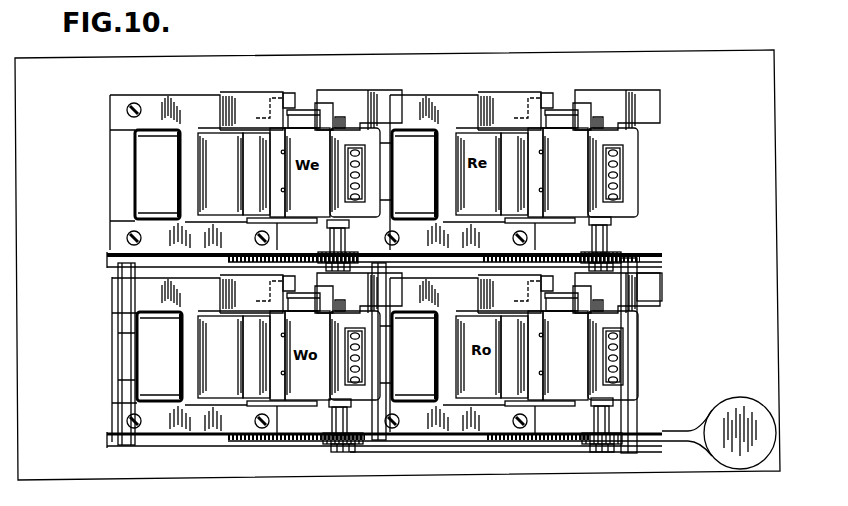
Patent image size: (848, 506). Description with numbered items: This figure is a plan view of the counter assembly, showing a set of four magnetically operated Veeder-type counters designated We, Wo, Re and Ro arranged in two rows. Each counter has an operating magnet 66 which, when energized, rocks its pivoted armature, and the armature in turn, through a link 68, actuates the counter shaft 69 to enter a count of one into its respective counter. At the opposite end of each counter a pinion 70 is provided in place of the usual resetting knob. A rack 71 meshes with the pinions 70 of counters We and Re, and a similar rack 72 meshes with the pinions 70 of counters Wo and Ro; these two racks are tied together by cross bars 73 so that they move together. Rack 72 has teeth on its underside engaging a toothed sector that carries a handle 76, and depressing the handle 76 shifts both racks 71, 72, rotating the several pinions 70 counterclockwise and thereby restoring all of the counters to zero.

The operating magnet 66 is at (155, 143).
The link 68 is at (305, 106).
The counter shaft 69 is at (345, 226).
The pinion 70 is at (327, 250).
The rack 71 is at (546, 253).
The rack 72 is at (537, 441).
The cross bar 73 is at (125, 363).
The handle 76 is at (742, 402).